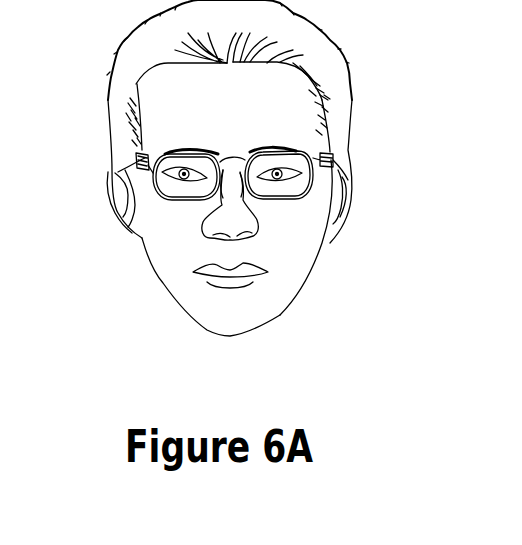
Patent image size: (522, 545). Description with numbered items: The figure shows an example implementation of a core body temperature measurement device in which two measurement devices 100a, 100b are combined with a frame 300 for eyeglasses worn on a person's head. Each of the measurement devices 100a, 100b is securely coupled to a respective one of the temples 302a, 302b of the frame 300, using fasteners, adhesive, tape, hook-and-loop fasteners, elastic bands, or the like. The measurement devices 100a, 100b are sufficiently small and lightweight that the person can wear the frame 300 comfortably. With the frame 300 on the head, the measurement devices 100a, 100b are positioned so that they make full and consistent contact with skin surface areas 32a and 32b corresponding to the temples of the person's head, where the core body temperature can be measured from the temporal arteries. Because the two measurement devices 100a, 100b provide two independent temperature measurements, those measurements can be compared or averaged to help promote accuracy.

The skin surface area 32a is at (138, 130).
The skin surface area 32b is at (318, 145).
The measurement device 100a is at (136, 154).
The measurement device 100b is at (337, 157).
The frame 300 is at (297, 197).
The temple 302a is at (145, 157).
The temple 302b is at (337, 163).